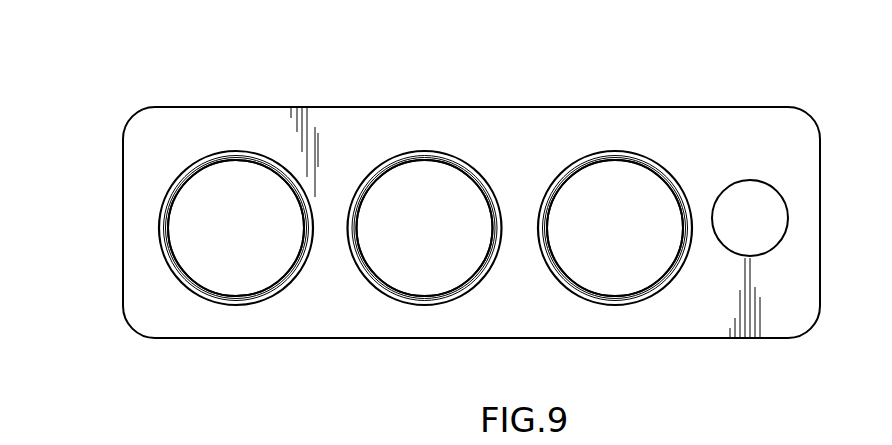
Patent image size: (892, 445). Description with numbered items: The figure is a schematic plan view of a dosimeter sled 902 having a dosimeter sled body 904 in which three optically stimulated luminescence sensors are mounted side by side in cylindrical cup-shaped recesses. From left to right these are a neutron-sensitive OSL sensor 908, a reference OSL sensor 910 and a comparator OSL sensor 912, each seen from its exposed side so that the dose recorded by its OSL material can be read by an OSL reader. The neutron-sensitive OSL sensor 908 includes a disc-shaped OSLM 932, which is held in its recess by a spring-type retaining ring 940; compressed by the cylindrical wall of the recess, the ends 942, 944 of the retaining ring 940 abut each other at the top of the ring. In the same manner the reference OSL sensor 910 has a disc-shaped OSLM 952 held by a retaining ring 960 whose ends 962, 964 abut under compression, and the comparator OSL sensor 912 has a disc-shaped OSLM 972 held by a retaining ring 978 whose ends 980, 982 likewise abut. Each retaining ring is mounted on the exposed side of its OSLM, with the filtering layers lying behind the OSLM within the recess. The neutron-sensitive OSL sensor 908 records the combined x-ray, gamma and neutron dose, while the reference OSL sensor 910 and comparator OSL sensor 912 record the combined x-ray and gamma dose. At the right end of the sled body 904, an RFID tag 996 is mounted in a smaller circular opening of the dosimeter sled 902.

The dosimeter sled 902 is at (313, 83).
The dosimeter sled body 904 is at (512, 130).
The neutron-sensitive OSL sensor 908 is at (211, 272).
The reference OSL sensor 910 is at (400, 272).
The comparator OSL sensor 912 is at (590, 272).
The disc-shaped OSLM 932 is at (252, 270).
The retaining ring 940 is at (165, 197).
The end of retaining ring 942 is at (222, 150).
The end of retaining ring 944 is at (246, 150).
The disc-shaped OSLM 952 is at (442, 268).
The retaining ring 960 is at (368, 168).
The end of retaining ring 962 is at (412, 150).
The end of retaining ring 964 is at (436, 150).
The disc-shaped OSLM 972 is at (632, 268).
The retaining ring 978 is at (558, 168).
The end of retaining ring 980 is at (599, 148).
The end of retaining ring 982 is at (625, 148).
The RFID tag 996 is at (750, 193).